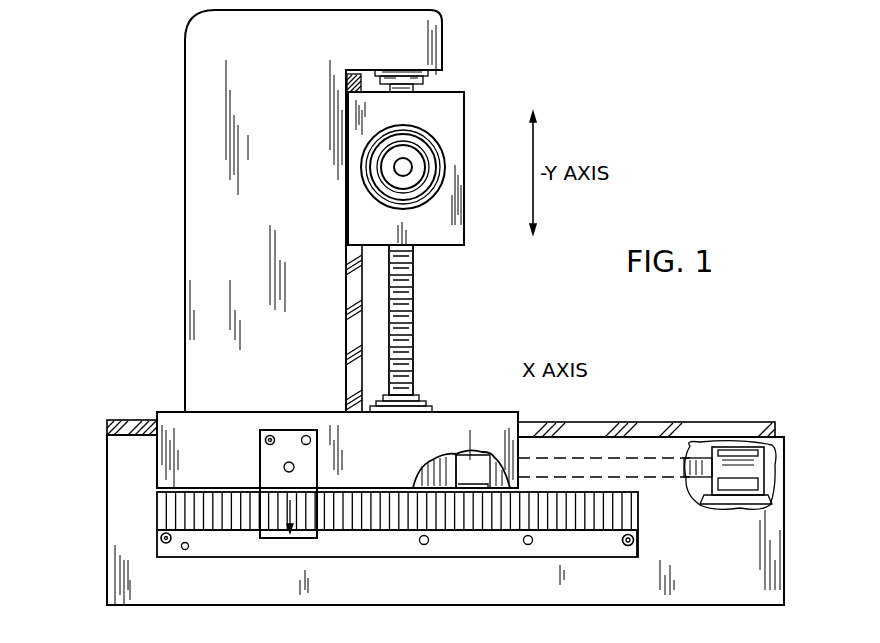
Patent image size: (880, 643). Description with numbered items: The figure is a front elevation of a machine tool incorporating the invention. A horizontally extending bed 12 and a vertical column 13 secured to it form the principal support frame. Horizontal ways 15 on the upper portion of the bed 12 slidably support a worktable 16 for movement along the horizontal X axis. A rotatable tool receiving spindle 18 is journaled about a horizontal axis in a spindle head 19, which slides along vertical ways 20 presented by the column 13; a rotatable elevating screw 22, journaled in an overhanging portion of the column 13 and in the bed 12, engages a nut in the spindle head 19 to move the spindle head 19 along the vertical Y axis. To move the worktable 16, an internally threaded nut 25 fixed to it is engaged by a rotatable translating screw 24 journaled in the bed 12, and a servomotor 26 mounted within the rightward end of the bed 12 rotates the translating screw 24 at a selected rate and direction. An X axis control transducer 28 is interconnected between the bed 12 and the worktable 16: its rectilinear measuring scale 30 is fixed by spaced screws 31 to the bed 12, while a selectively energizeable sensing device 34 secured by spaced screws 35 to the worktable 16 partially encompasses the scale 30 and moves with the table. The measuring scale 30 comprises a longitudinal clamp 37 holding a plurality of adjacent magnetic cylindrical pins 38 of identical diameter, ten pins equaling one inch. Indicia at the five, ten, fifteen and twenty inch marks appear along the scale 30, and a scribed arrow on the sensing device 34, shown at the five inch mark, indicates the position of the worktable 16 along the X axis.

The bed 12 is at (757, 590).
The column 13 is at (204, 288).
The horizontal ways 15 is at (125, 418).
The worktable 16 is at (425, 420).
The tool receiving spindle 18 is at (412, 167).
The spindle head 19 is at (458, 110).
The vertical ways 20 is at (365, 346).
The elevating screw 22 is at (410, 320).
The translating screw 24 is at (626, 466).
The nut 25 is at (472, 465).
The servomotor 26 is at (760, 468).
The X axis control transducer 28 is at (246, 480).
The measuring scale 30 is at (645, 534).
The screws 31 is at (166, 540).
The sensing device 34 is at (278, 533).
The screws 35 is at (272, 436).
The longitudinal clamp 37 is at (232, 547).
The magnetic pins 38 is at (640, 512).